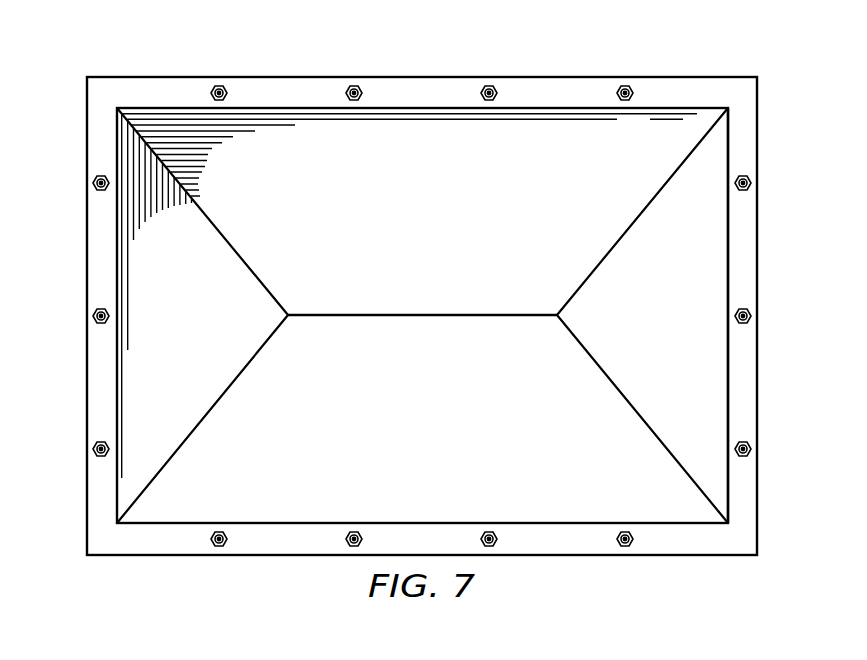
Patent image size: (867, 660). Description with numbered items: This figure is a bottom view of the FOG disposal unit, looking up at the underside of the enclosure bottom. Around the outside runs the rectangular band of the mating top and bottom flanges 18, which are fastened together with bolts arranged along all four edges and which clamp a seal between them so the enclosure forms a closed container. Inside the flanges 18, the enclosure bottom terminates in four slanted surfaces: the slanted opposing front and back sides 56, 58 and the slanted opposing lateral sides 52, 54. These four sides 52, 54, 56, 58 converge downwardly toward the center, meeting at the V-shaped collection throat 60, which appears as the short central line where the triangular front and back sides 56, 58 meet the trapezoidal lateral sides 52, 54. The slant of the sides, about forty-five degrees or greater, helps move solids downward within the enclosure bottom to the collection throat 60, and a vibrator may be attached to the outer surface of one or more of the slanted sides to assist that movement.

The flanges 18 is at (704, 86).
The slanted lateral side 52 is at (298, 507).
The slanted lateral side 54 is at (545, 122).
The slanted front side 56 is at (135, 257).
The slanted back side 58 is at (709, 255).
The V-shaped collection throat 60 is at (458, 316).